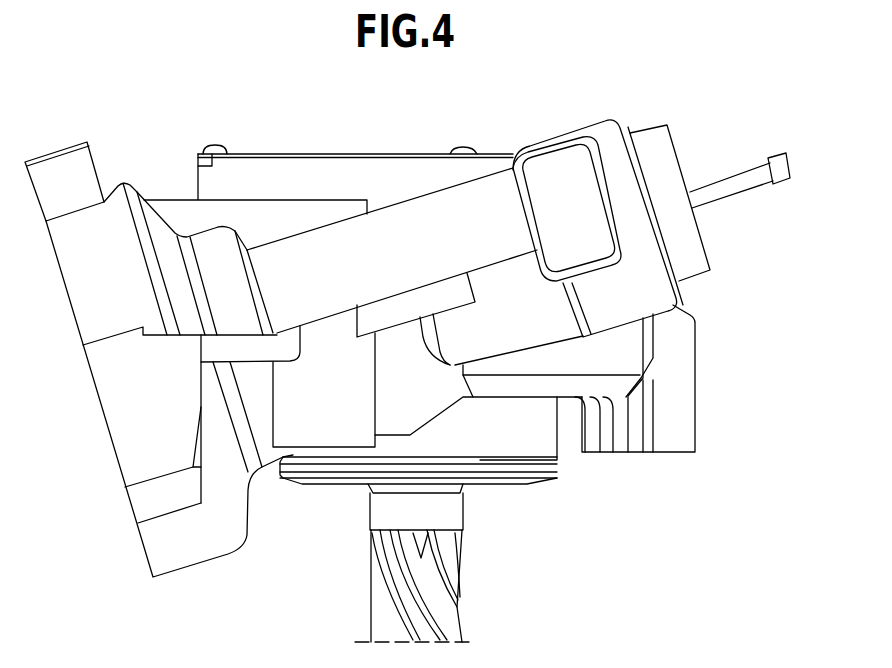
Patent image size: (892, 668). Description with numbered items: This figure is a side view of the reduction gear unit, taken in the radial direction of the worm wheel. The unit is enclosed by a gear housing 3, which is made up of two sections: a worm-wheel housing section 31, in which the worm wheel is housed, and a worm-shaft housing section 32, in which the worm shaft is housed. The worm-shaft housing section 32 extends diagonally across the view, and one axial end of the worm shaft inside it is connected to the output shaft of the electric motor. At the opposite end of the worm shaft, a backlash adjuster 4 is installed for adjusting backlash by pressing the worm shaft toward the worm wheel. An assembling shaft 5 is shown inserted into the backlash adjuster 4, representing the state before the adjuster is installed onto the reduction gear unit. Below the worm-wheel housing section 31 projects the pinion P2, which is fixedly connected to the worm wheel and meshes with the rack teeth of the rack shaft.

The gear housing 3 is at (170, 165).
The worm-wheel housing section 31 is at (323, 145).
The worm-shaft housing section 32 is at (418, 180).
The backlash adjuster 4 is at (636, 122).
The assembling shaft 5 is at (771, 150).
The pinion P2 is at (452, 578).